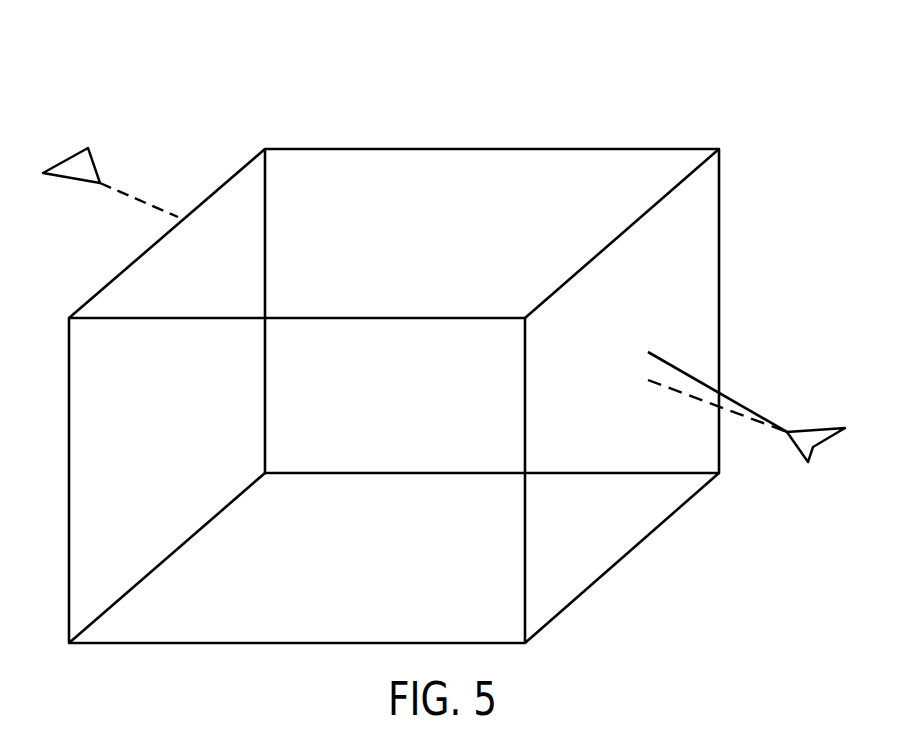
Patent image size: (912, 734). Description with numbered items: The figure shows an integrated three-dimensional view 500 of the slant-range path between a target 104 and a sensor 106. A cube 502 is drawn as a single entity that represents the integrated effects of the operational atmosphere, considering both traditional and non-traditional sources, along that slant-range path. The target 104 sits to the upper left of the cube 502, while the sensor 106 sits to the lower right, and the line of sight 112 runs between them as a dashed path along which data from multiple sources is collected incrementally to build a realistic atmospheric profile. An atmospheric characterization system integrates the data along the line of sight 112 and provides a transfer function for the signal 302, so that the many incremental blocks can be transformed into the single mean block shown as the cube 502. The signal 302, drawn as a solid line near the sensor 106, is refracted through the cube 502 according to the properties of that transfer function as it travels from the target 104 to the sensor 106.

The integrated 3-D view 500 is at (724, 78).
The cube 502 is at (389, 148).
The target 104 is at (67, 167).
The signal 302 is at (692, 373).
The line of sight 112 is at (702, 398).
The sensor 106 is at (828, 442).